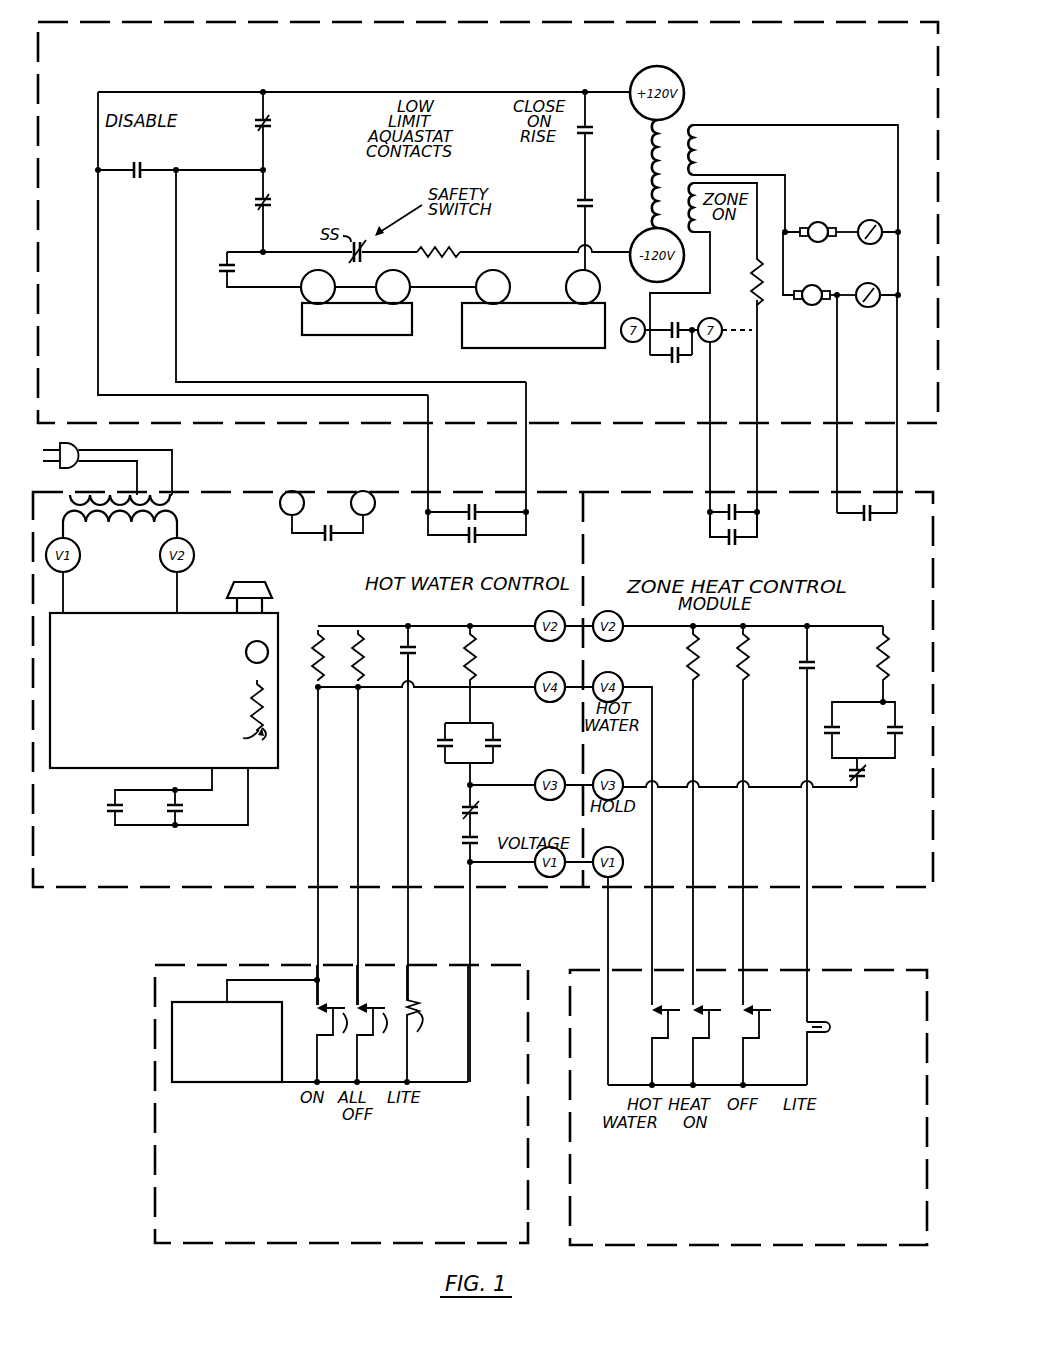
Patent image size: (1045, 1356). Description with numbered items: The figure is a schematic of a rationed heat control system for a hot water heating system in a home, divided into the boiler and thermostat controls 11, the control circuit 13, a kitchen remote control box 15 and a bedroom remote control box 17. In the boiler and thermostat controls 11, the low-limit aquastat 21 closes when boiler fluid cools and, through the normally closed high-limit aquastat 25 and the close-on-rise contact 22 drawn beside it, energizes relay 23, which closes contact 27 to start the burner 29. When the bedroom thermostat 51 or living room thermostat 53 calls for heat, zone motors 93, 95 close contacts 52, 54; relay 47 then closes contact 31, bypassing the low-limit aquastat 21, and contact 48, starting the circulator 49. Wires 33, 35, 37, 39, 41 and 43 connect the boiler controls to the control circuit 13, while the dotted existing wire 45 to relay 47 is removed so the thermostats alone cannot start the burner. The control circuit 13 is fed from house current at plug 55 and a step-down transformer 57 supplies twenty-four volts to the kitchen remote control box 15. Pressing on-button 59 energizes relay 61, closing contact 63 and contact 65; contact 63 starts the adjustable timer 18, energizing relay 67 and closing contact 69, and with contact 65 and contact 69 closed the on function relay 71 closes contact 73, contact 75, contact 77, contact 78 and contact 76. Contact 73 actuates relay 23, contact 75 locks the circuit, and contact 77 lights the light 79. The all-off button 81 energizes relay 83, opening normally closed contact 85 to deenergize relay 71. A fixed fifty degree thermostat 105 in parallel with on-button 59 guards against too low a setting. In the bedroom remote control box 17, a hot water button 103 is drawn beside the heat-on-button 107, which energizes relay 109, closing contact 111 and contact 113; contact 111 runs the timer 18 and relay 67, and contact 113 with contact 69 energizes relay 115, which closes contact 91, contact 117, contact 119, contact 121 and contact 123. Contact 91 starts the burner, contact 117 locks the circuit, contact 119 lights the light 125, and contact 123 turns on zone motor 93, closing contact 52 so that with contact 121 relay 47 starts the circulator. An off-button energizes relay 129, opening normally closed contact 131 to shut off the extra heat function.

The boiler and thermostat controls 11 is at (736, 23).
The control circuit 13 is at (582, 493).
The kitchen remote control box 15 is at (156, 1118).
The bedroom remote control box 17 is at (822, 971).
The timer 18 is at (192, 613).
The low-limit aquastat 21 is at (256, 118).
The close on rise contact 22 is at (606, 139).
The relay 23 is at (449, 240).
The high-limit aquastat 25 is at (256, 197).
The contact 27 is at (218, 264).
The burner 29 is at (340, 338).
The contact 31 is at (152, 150).
The wire 33 is at (443, 453).
The wire 35 is at (540, 447).
The wire 37 is at (698, 439).
The wire 39 is at (745, 418).
The wire 41 is at (821, 404).
The wire 43 is at (882, 404).
The existing wire 45 is at (743, 340).
The relay 47 is at (743, 280).
The contact 48 is at (572, 208).
The circulator 49 is at (537, 352).
The bedroom thermostat 51 is at (877, 282).
The contact 52 is at (672, 364).
The living room thermostat 53 is at (879, 220).
The contact 54 is at (679, 322).
The plug 55 is at (107, 460).
The step-down transformer 57 is at (170, 520).
The on-button 59 is at (332, 1023).
The relay 61 is at (331, 655).
The contact 63 is at (131, 807).
The contact 65 is at (440, 738).
The relay 67 is at (238, 725).
The contact 69 is at (461, 852).
The on function relay 71 is at (479, 660).
The contact 73 is at (477, 505).
The contact 75 is at (503, 737).
The contact 76 is at (722, 546).
The contact 77 is at (414, 656).
The contact 78 is at (332, 545).
The light 79 is at (428, 1023).
The all-off button 81 is at (373, 1023).
The relay 83 is at (371, 655).
The contact 85 is at (462, 806).
The contact 91 is at (462, 540).
The zone motor 93 is at (824, 288).
The zone motor 95 is at (829, 221).
The hot water pushbutton 103 is at (666, 1006).
The fixed 50° F. thermostat 105 is at (242, 1003).
The heat-on-button 107 is at (709, 1006).
The relay 109 is at (691, 664).
The contact 111 is at (196, 807).
The contact 113 is at (838, 738).
The relay 115 is at (886, 640).
The contact 117 is at (890, 737).
The contact 119 is at (799, 664).
The contact 121 is at (744, 508).
The contact 123 is at (868, 528).
The light 125 is at (820, 1020).
The relay 129 is at (739, 680).
The contact 131 is at (866, 779).